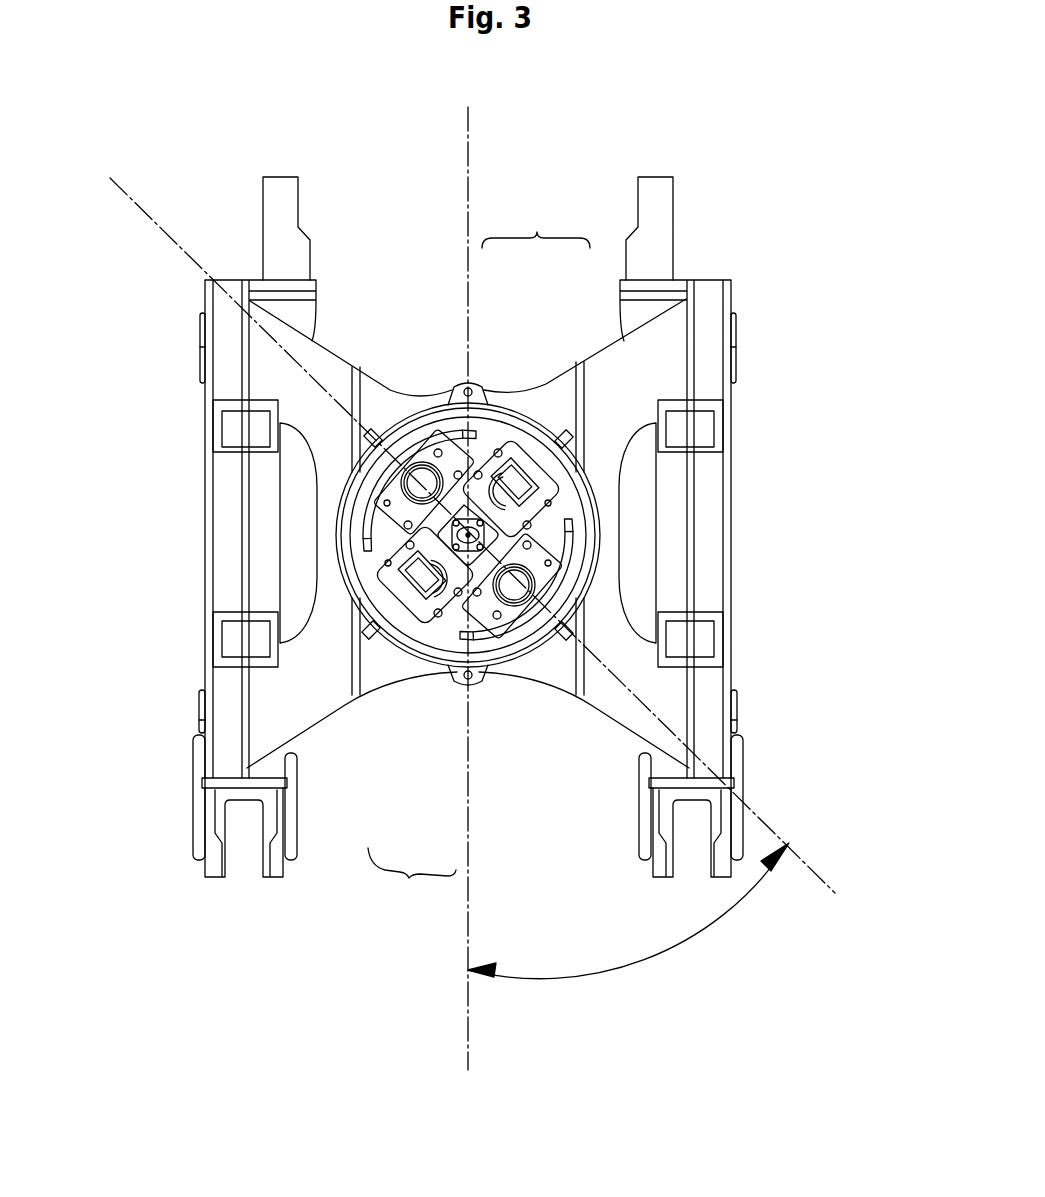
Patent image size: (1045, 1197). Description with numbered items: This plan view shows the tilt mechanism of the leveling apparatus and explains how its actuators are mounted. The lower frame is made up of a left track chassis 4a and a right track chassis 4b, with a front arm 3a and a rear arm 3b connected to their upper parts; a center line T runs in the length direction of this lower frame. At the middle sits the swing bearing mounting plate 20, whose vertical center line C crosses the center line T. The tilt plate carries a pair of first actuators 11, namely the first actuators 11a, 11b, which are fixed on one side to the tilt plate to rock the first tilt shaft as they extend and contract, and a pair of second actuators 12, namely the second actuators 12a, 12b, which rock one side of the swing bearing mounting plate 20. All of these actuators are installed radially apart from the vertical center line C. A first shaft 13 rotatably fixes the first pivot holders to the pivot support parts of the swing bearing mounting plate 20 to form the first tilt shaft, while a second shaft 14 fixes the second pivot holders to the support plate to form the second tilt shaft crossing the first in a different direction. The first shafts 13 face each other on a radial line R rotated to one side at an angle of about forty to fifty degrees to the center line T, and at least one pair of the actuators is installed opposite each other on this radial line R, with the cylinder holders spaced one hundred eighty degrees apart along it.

The front arm 3a is at (280, 713).
The rear arm 3b is at (302, 343).
The left track chassis 4a is at (222, 535).
The right track chassis 4b is at (710, 582).
The first actuators 11 is at (412, 878).
The first actuator 11a is at (452, 557).
The first actuator 11b is at (498, 560).
The second actuators 12 is at (536, 225).
The second actuator 12a is at (420, 492).
The second actuator 12b is at (517, 487).
The first shaft 13 is at (562, 632).
The second shaft 14 is at (378, 636).
The swing bearing mounting plate 20 is at (355, 512).
The vertical center line C is at (545, 487).
The center line T is at (468, 152).
The radial line R is at (752, 828).